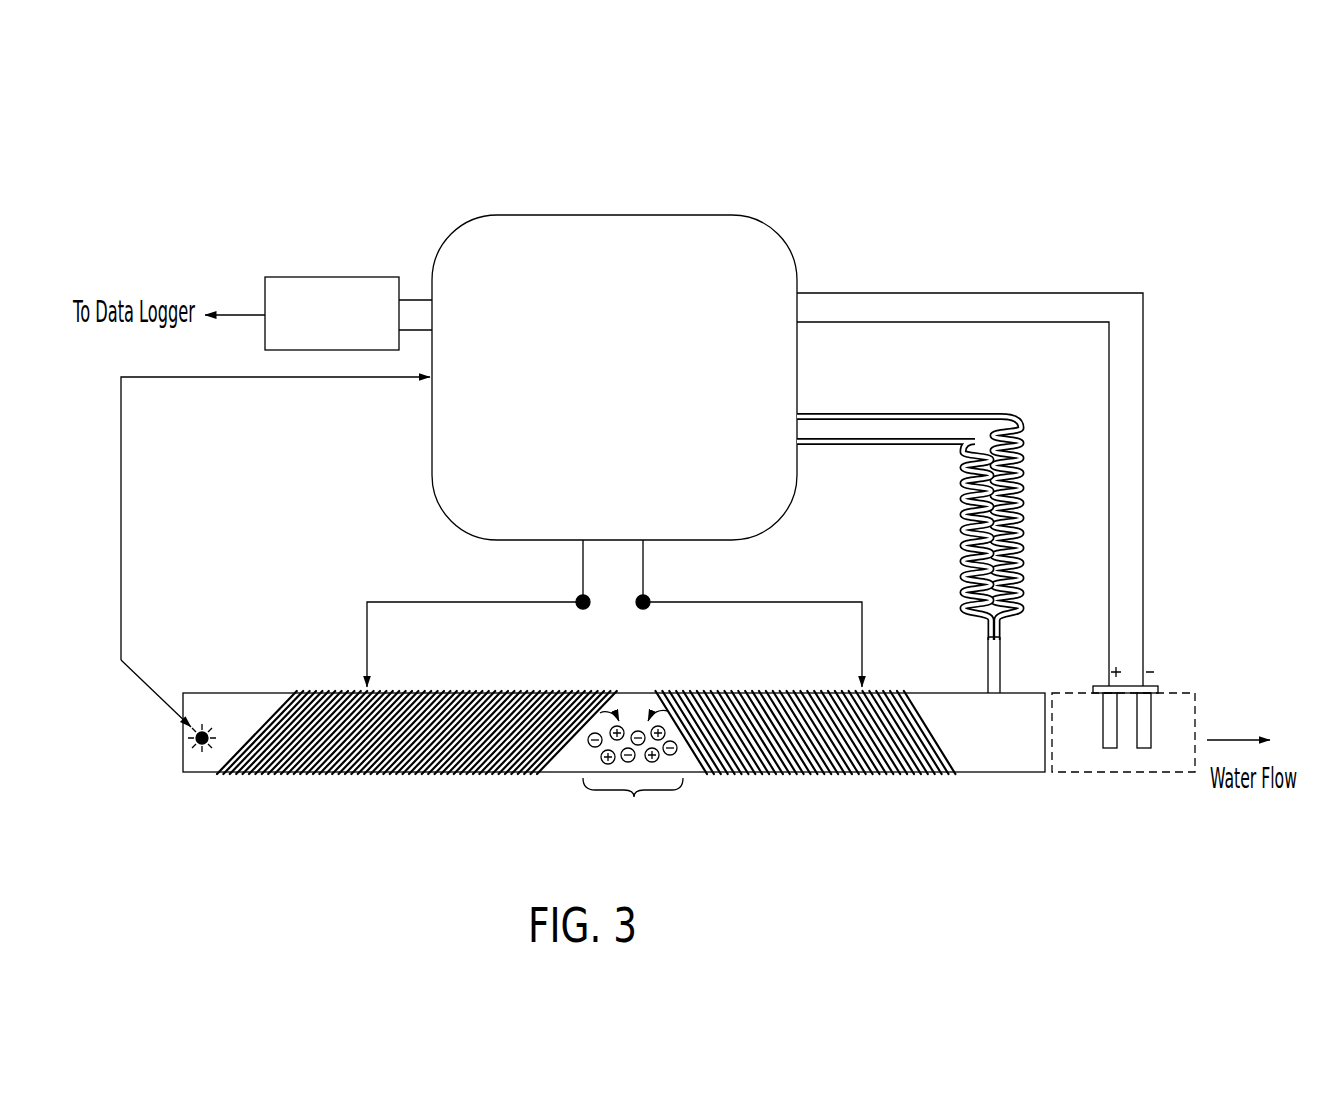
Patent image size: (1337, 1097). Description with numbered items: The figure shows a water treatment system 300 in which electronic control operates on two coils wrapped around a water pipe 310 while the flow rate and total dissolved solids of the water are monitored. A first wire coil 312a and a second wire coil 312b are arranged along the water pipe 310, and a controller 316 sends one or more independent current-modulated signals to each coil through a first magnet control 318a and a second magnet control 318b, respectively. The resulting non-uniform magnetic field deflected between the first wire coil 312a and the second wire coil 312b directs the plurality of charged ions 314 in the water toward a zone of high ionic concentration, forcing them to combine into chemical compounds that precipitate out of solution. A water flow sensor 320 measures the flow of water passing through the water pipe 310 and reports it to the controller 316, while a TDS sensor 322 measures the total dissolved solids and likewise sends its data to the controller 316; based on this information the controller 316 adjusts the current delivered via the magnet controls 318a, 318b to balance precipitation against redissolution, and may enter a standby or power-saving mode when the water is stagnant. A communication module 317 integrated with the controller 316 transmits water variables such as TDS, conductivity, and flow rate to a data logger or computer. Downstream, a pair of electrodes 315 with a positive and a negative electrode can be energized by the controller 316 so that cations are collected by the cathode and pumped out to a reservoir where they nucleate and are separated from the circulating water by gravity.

The water treatment system 300 is at (148, 136).
The water pipe 310 is at (223, 692).
The first wire coil 312a is at (505, 778).
The second wire coil 312b is at (733, 778).
The plurality of charged ions 314 is at (629, 770).
The pair of electrodes 315 is at (1160, 652).
The controller 316 is at (772, 232).
The communication module 317 is at (375, 273).
The first magnet control 318a is at (386, 590).
The second magnet control 318b is at (867, 619).
The water flow sensor 320 is at (176, 753).
The TDS sensor 322 is at (1010, 656).